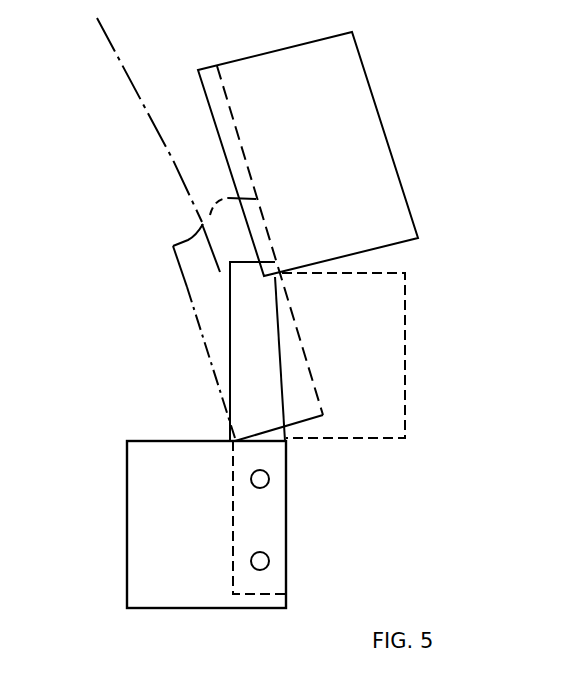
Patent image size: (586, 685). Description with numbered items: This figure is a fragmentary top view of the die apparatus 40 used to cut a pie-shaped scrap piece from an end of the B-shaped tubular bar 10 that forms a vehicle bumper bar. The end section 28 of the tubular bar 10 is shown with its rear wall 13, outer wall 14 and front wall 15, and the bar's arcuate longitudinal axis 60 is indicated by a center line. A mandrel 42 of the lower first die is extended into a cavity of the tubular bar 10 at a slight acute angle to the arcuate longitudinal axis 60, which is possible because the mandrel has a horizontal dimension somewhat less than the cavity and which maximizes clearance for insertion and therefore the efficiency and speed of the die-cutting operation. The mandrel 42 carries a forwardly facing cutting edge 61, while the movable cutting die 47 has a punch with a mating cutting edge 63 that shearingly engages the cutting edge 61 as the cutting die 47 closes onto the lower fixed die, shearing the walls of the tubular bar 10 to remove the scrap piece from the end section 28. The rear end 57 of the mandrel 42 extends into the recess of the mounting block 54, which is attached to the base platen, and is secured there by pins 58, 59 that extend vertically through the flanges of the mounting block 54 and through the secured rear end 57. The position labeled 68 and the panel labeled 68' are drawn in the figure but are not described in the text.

The arcuate longitudinal axis 60 is at (131, 86).
The phantom position line of lid 68 is at (242, 223).
The lid / flap panel 68' is at (325, 154).
The die apparatus 40 is at (505, 213).
The tubular bar 10 is at (167, 258).
The end section 28 is at (203, 278).
The rear wall 13 is at (199, 333).
The mandrel 42 is at (231, 308).
The cutting edge 63 is at (231, 385).
The cutting edge 61 is at (282, 340).
The front wall 15 is at (313, 380).
The outer wall 14 is at (383, 425).
The cutting die 47 is at (407, 378).
The mounting block 54 is at (126, 501).
The rear end 57 is at (272, 512).
The pin 59 is at (251, 477).
The pin 58 is at (251, 558).